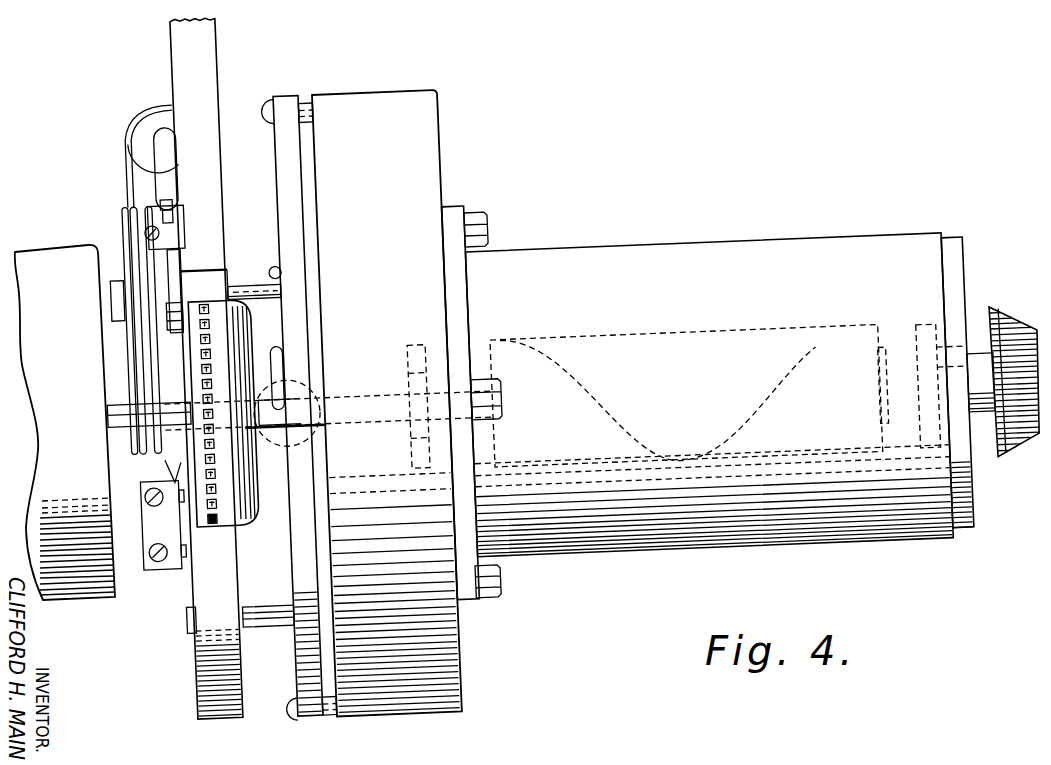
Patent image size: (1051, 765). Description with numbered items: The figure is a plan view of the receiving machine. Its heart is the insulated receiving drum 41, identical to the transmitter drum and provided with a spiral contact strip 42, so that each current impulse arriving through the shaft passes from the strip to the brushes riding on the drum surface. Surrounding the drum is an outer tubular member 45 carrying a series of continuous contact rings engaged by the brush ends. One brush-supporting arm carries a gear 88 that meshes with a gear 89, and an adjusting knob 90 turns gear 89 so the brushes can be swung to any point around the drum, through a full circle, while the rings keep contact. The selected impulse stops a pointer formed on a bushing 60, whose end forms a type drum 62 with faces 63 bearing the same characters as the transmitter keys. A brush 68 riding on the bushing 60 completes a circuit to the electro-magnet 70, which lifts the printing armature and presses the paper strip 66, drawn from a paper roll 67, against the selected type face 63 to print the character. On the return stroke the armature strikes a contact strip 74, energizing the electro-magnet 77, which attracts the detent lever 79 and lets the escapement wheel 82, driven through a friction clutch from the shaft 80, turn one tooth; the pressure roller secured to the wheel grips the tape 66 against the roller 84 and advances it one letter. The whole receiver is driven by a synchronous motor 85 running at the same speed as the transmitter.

The receiving drum 41 is at (748, 348).
The spiral contact strip 42 is at (805, 367).
The outer tubular member 45 is at (906, 269).
The bushing 60 is at (249, 443).
The type drum 62 is at (233, 520).
The type faces 63 is at (196, 526).
The paper strip 66 is at (174, 41).
The paper roll 67 is at (193, 704).
The brush 68 is at (268, 357).
The electro-magnet 70 is at (265, 443).
The contact strip 74 is at (150, 455).
The electro-magnet 77 is at (139, 118).
The detent lever 79 is at (156, 142).
The shaft 80 is at (240, 284).
The escapement wheel 82 is at (164, 331).
The roller 84 is at (199, 264).
The synchronous motor 85 is at (57, 245).
The gear 88 is at (940, 325).
The gear 89 is at (941, 476).
The adjusting knob 90 is at (1004, 355).